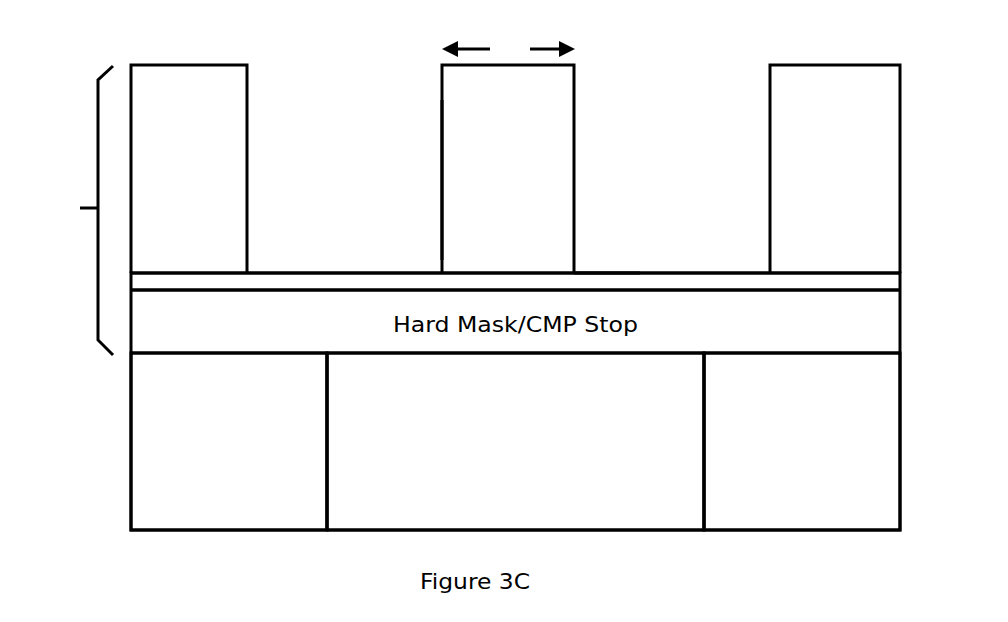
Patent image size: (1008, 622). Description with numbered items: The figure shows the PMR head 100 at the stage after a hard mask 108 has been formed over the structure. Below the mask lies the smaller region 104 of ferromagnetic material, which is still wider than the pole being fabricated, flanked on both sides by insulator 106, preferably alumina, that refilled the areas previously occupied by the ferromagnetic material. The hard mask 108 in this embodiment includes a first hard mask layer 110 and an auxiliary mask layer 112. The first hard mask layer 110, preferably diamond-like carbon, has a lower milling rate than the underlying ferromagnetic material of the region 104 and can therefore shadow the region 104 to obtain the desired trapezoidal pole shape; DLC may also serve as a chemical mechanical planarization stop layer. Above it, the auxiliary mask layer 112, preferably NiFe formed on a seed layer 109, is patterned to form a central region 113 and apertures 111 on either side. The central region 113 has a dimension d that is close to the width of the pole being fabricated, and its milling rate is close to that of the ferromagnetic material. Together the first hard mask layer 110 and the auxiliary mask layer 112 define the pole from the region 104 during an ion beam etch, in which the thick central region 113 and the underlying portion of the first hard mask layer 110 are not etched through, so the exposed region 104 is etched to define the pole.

The PMR head 100 is at (497, 28).
The smaller region 104 is at (590, 532).
The insulator 106 is at (143, 532).
The hard mask 108 is at (83, 210).
The seed layer 109 is at (592, 272).
The first hard mask layer 110 is at (262, 290).
The apertures 111 is at (380, 98).
The auxiliary mask layer 112 is at (246, 128).
The central region 113 is at (420, 178).